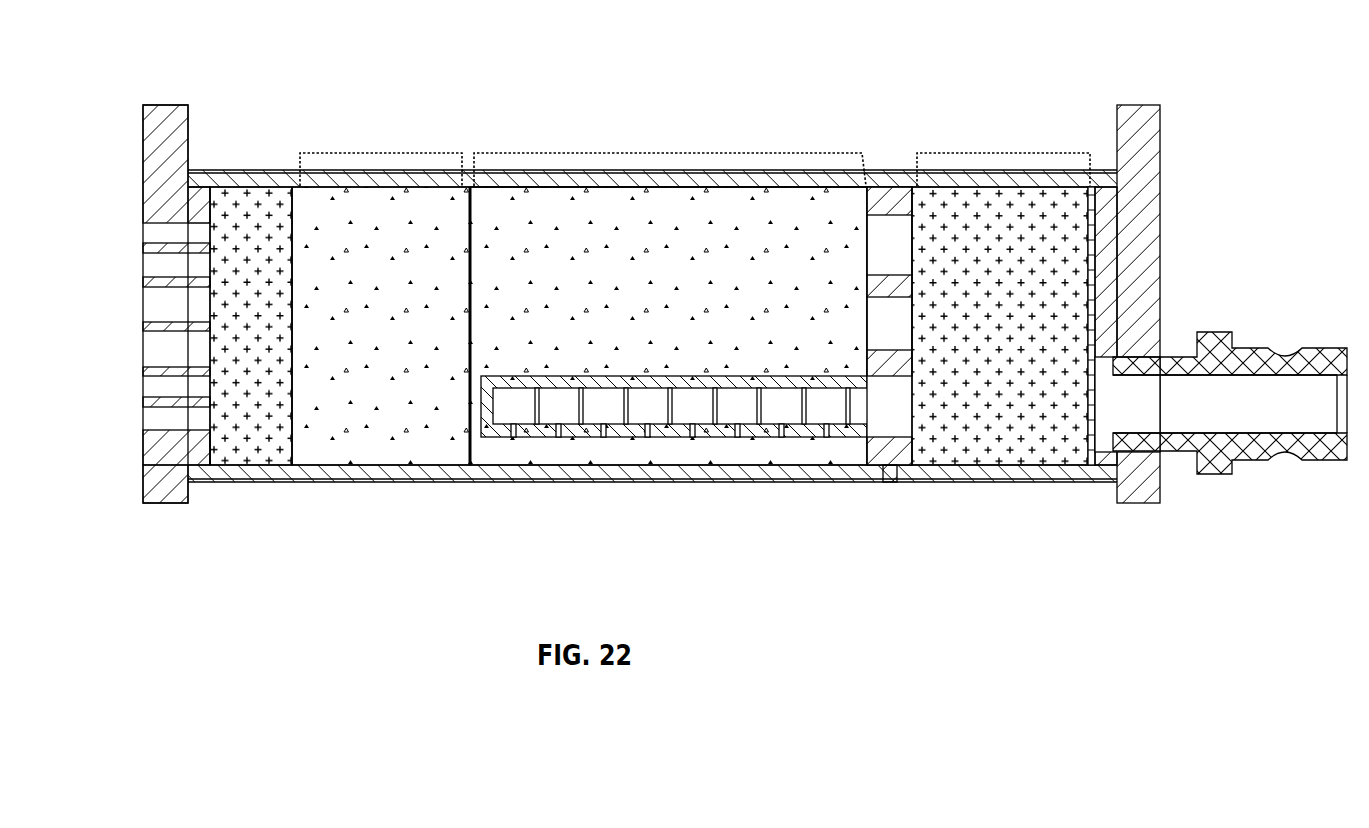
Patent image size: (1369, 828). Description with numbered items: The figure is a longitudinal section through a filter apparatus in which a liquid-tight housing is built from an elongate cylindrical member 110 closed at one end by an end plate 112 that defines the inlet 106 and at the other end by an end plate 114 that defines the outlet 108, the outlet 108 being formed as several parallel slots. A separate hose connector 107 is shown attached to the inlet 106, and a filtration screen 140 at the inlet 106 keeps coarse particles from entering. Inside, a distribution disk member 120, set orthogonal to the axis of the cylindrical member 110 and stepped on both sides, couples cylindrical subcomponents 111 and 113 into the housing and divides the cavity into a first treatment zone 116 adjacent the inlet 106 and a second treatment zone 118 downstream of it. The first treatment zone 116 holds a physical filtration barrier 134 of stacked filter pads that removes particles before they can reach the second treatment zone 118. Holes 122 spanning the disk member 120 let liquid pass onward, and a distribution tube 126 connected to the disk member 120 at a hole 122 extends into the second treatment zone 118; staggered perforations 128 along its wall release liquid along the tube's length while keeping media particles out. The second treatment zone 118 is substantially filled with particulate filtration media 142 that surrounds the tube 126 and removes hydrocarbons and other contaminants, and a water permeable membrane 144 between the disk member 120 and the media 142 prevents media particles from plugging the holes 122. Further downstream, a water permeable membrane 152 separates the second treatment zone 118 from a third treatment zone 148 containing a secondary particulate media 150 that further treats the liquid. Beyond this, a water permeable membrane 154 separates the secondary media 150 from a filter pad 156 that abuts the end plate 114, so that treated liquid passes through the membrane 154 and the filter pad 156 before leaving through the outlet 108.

The inlet 106 is at (1108, 378).
The hose connector 107 is at (1266, 349).
The outlet 108 is at (148, 387).
The cylindrical member 110 is at (592, 171).
The cylindrical subcomponent 111 is at (548, 478).
The end plate 112 is at (1142, 137).
The cylindrical subcomponent 113 is at (990, 478).
The end plate 114 is at (162, 462).
The first treatment zone 116 is at (1003, 154).
The second treatment zone 118 is at (670, 152).
The distribution disk member 120 is at (884, 203).
The holes 122 is at (873, 326).
The distribution tube 126 is at (770, 430).
The perforations 128 is at (847, 410).
The filtration barrier 134 is at (1035, 205).
The filtration screen 140 is at (1092, 432).
The particulate filtration media 142 is at (738, 212).
The water permeable membrane 144 is at (867, 243).
The third treatment zone 148 is at (381, 154).
The secondary particulate media 150 is at (413, 212).
The water permeable membrane 152 is at (470, 422).
The water permeable membrane 154 is at (292, 417).
The filter pad 156 is at (249, 215).